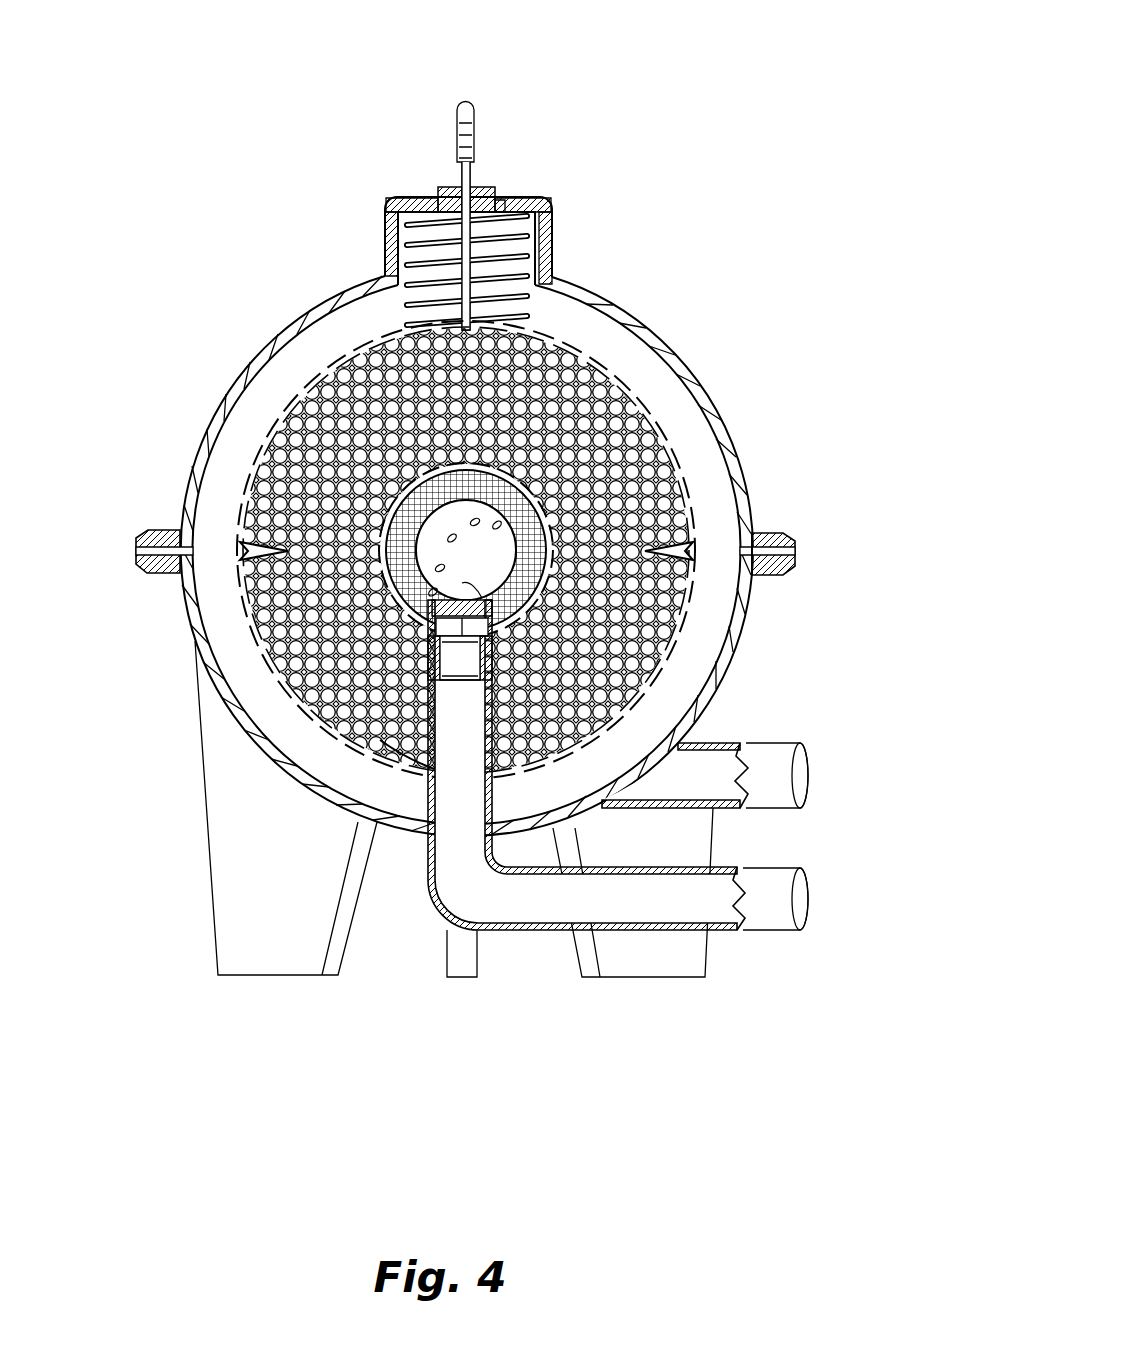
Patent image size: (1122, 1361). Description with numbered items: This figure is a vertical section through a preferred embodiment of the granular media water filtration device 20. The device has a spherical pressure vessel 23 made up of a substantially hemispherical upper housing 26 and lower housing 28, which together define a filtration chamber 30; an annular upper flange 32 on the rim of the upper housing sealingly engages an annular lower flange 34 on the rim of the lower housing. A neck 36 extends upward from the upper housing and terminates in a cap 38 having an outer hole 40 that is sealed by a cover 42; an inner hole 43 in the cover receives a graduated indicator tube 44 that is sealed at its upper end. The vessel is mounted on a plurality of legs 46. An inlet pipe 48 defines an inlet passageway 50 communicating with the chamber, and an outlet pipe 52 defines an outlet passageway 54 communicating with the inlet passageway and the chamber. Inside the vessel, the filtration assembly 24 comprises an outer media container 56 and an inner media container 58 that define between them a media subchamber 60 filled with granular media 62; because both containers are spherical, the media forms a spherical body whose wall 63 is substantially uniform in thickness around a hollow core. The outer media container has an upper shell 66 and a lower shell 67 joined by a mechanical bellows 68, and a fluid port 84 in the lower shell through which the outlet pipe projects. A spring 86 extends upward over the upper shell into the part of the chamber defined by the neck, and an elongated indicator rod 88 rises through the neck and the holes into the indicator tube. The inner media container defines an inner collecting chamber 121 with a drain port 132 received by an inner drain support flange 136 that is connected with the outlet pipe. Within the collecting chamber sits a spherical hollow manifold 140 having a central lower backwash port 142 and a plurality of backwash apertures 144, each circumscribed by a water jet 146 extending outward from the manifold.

The filtration device 20 is at (850, 247).
The pressure vessel 23 is at (268, 342).
The filtration assembly 24 is at (652, 335).
The upper housing 26 is at (656, 626).
The lower housing 28 is at (183, 622).
The filtration chamber 30 is at (207, 428).
The annular upper flange 32 is at (165, 531).
The annular lower flange 34 is at (162, 572).
The neck 36 is at (550, 235).
The cap 38 is at (530, 205).
The outer hole 40 is at (450, 188).
The cover 42 is at (490, 198).
The inner hole 43 is at (480, 186).
The indicator tube 44 is at (466, 100).
The legs 46 is at (230, 923).
The inlet pipe 48 is at (815, 746).
The inlet passageway 50 is at (707, 790).
The outlet pipe 52 is at (780, 897).
The outlet passageway 54 is at (720, 888).
The outer media container 56 is at (715, 395).
The inner media container 58 is at (418, 618).
The media subchamber 60 is at (642, 508).
The granular media 62 is at (365, 390).
The wall 63 is at (626, 380).
The upper shell 66 is at (748, 518).
The lower shell 67 is at (530, 622).
The mechanical bellows 68 is at (742, 542).
The fluid port 84 is at (445, 735).
The spring 86 is at (407, 245).
The indicator rod 88 is at (540, 268).
The inner collecting chamber 121 is at (520, 640).
The drain port 132 is at (500, 668).
The inner drain support flange 136 is at (365, 655).
The manifold 140 is at (535, 605).
The lower backwash port 142 is at (505, 662).
The backwash apertures 144 is at (455, 540).
The water jets 146 is at (655, 405).